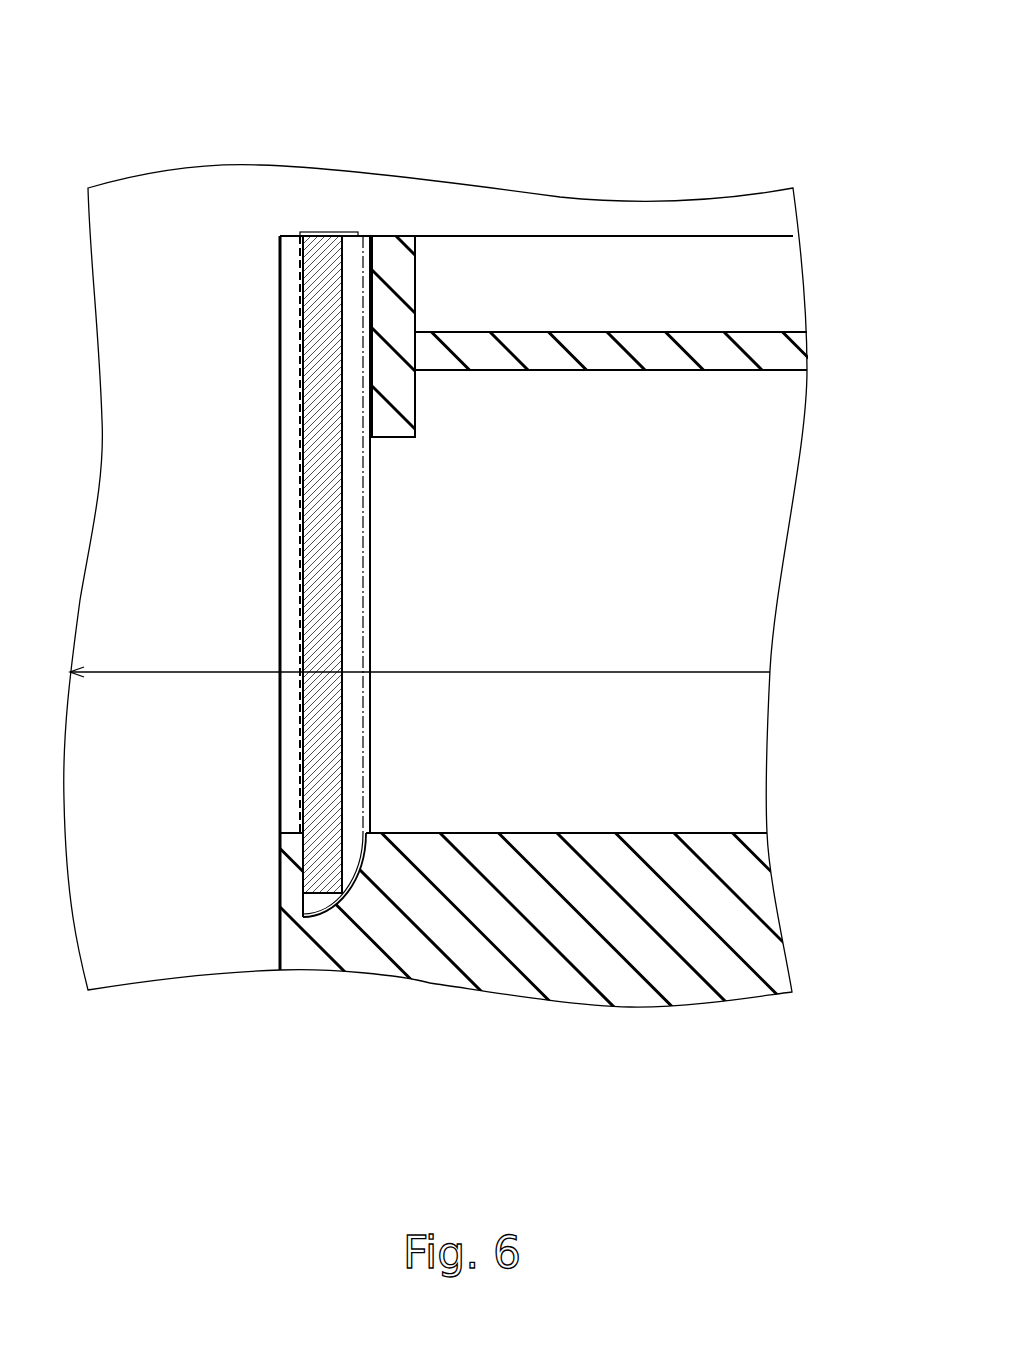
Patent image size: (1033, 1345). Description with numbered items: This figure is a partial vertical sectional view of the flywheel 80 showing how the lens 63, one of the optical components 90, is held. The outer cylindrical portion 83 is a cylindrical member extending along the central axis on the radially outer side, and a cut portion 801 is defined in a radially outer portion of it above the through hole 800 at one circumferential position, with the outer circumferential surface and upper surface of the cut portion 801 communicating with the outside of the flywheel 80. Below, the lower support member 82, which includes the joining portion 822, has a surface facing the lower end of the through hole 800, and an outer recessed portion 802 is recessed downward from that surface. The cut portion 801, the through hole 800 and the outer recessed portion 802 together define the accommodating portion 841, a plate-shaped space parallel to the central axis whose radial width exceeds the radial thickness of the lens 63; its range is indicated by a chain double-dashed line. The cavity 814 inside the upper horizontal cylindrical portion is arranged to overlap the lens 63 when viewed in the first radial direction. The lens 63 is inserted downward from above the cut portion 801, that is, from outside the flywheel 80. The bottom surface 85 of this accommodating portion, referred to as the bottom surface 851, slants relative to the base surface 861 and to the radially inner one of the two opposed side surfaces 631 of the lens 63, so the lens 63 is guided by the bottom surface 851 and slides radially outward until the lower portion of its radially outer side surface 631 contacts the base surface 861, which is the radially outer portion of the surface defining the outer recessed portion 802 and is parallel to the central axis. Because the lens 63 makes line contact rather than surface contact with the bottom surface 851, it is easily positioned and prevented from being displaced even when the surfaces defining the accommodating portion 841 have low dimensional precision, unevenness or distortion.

The flywheel 80 is at (592, 153).
The through hole 800 is at (295, 715).
The cut portion 801 is at (322, 362).
The outer recessed portion 802 is at (313, 900).
The cavity 814 is at (688, 765).
The lower support member 82 is at (585, 957).
The joining portion 822 is at (587, 981).
The outer cylindrical portion 83 is at (292, 277).
The lens 63 is at (351, 510).
The optical components 90 is at (318, 275).
The side surfaces 631 is at (300, 440).
The accommodating portion 841 is at (417, 663).
The bottom surface 85 is at (358, 885).
The bottom surface 851 is at (361, 939).
The base surface 861 is at (243, 973).